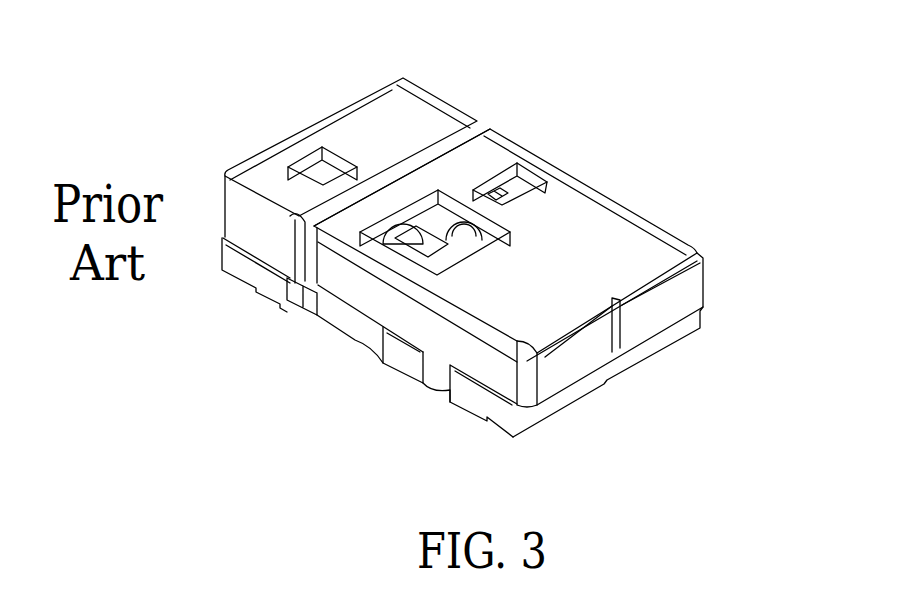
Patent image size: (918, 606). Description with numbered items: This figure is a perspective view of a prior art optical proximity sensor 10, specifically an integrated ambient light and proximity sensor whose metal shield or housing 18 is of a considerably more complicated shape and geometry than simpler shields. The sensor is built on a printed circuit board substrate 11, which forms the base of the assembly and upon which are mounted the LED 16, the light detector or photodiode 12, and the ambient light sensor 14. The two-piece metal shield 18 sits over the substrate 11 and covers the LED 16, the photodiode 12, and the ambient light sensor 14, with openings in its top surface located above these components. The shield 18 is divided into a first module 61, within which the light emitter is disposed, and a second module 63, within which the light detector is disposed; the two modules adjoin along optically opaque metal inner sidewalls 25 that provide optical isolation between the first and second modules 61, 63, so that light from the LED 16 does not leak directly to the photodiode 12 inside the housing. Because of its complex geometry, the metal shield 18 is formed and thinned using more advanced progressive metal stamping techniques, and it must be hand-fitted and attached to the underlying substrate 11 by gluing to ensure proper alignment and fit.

The optical proximity sensor 10 is at (752, 99).
The printed circuit board substrate 11 is at (667, 343).
The light detector or photodiode 12 is at (412, 237).
The ambient light sensor 14 is at (527, 172).
The LED 16 is at (338, 168).
The metal shield or housing 18 is at (430, 110).
The optically opaque metal inner sidewalls 25 is at (481, 127).
The first module 61 is at (263, 175).
The second module 63 is at (672, 249).